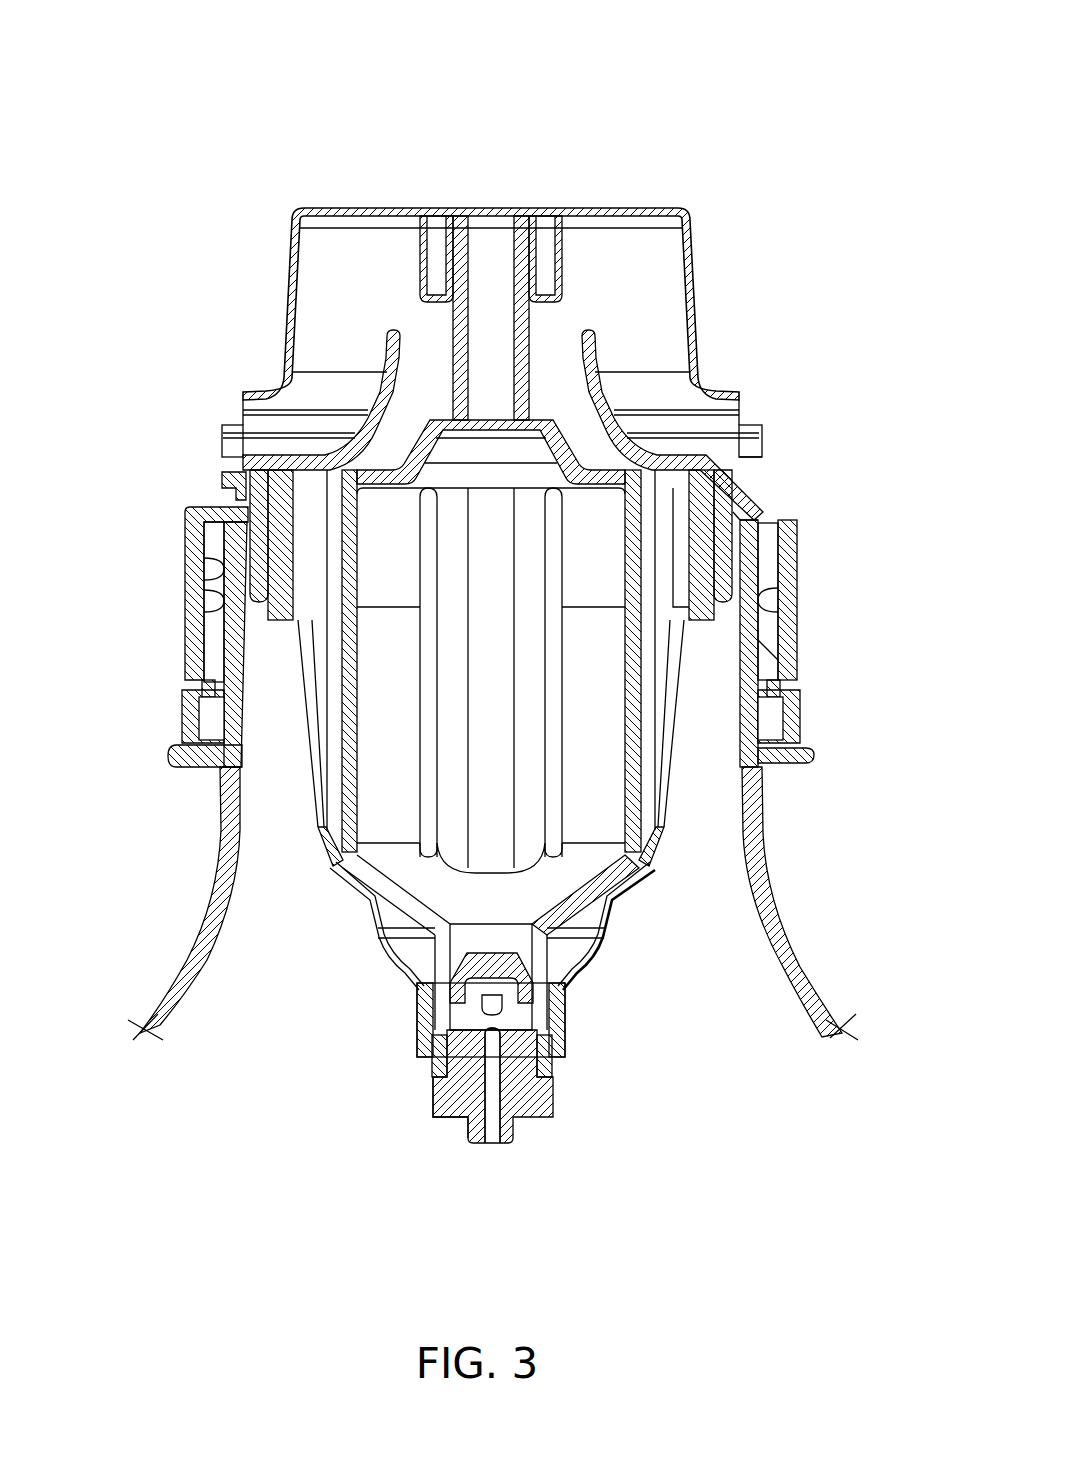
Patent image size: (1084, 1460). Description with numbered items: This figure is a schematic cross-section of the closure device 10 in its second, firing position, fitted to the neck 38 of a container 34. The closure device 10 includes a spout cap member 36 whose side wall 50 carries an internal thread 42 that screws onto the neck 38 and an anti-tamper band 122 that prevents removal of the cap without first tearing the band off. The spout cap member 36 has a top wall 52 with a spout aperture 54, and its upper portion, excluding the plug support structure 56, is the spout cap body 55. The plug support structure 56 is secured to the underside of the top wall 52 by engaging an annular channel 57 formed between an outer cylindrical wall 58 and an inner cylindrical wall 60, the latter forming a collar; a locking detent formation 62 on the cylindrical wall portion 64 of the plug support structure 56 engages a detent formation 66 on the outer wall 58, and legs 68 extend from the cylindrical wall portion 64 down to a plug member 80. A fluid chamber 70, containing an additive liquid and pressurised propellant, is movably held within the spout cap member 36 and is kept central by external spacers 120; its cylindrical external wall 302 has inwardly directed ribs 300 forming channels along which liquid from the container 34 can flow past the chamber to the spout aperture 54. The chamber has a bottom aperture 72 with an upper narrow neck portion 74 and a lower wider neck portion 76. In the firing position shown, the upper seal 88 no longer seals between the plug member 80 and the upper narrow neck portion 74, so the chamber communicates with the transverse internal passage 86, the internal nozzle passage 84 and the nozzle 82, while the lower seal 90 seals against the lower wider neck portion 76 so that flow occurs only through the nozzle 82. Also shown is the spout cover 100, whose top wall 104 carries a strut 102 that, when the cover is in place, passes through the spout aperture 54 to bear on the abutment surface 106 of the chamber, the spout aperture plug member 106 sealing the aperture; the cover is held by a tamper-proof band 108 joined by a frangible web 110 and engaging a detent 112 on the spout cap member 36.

The closure device 10 is at (740, 116).
The container 34 is at (832, 1014).
The spout cap member 36 is at (606, 404).
The neck 38 is at (781, 600).
The internal thread 42 is at (786, 638).
The side wall 50 is at (800, 685).
The top wall 52 is at (585, 332).
The spout aperture 54 is at (570, 336).
The spout cap body 55 is at (392, 340).
The plug support structure 56 is at (757, 514).
The annular channel 57 is at (244, 478).
The outer cylindrical wall 58 is at (207, 497).
The inner cylindrical wall 60 is at (214, 612).
The locking detent formation 62 is at (252, 490).
The cylindrical wall portion 64 is at (230, 566).
The detent formation 66 is at (772, 522).
The legs 68 is at (377, 945).
The fluid chamber 70 is at (346, 872).
The bottom aperture 72 is at (580, 946).
The upper narrow neck portion 74 is at (420, 990).
The lower wider neck portion 76 is at (418, 1045).
The plug member 80 is at (549, 1107).
The nozzle 82 is at (497, 1155).
The internal nozzle passage 84 is at (493, 1142).
The transverse internal passage 86 is at (557, 1053).
The upper seal 88 is at (535, 1000).
The lower seal 90 is at (435, 1085).
The spout cover 100 is at (352, 208).
The strut 102 is at (460, 322).
The top wall 104 is at (590, 210).
The abutment surface 106 is at (422, 225).
The tamper-proof band 108 is at (765, 445).
The frangible web 110 is at (735, 412).
The detent 112 is at (756, 488).
The spacers 120 is at (313, 790).
The anti-tamper band 122 is at (178, 748).
The inwardly directed ribs 300 is at (610, 885).
The external wall 302 is at (604, 720).